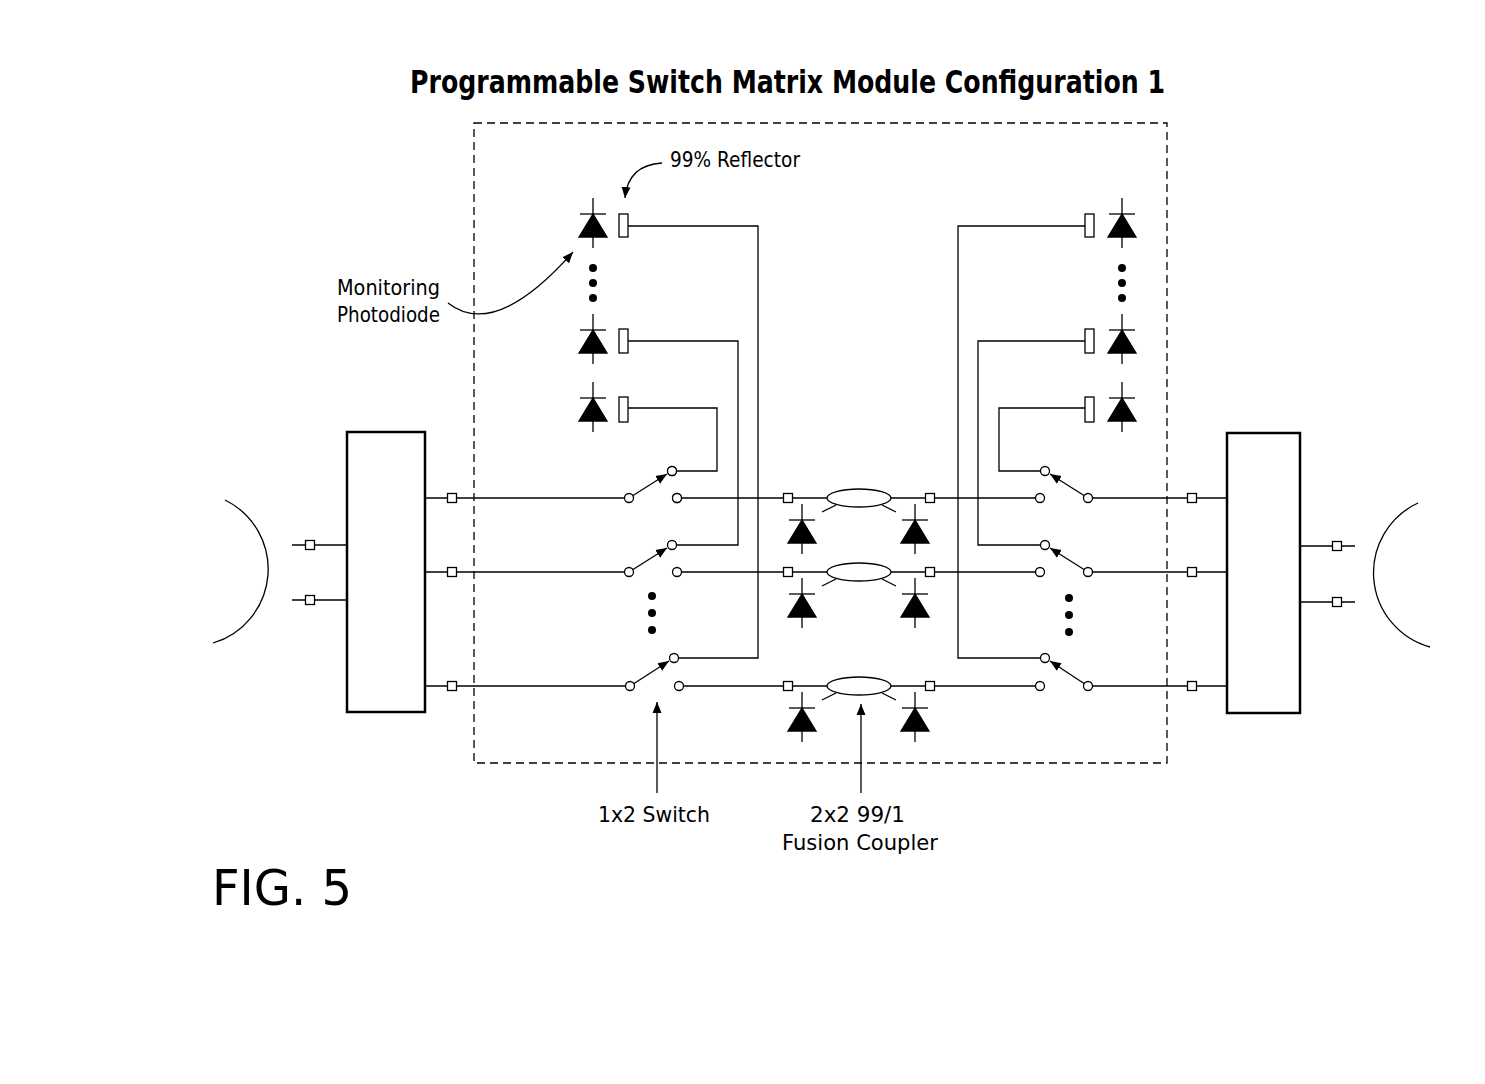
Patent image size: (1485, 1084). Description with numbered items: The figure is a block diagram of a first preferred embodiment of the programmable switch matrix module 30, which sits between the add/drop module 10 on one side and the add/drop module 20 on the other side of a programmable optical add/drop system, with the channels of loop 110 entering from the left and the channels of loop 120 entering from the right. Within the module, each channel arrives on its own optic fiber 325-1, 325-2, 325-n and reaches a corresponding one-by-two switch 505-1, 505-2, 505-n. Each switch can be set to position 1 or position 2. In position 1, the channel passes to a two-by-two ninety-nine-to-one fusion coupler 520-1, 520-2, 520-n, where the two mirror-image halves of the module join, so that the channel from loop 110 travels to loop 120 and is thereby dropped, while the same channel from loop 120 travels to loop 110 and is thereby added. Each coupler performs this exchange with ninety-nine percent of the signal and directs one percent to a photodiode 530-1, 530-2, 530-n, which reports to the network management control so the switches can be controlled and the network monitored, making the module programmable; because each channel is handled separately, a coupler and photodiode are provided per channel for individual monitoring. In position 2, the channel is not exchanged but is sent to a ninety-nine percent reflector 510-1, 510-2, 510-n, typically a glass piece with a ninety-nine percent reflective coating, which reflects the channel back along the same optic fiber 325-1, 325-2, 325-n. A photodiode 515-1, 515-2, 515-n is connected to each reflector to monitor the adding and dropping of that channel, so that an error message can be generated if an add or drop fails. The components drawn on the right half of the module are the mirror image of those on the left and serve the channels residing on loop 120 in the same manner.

The add/drop module 10 is at (383, 712).
The add/drop module 20 is at (1263, 713).
The programmable switch matrix module 30 is at (1167, 197).
The loop 110 is at (238, 606).
The loop 120 is at (1434, 607).
The optic fiber 325-1 is at (455, 503).
The optic fiber 325-2 is at (455, 577).
The optic fiber 325-n is at (455, 691).
The 1×2 switch 505-1 is at (650, 487).
The 1×2 switch 505-2 is at (650, 561).
The 1×2 switch 505-n is at (652, 675).
The switch position 1 is at (675, 466).
The switch position 2 is at (680, 503).
The 99% reflector 510-1 is at (626, 397).
The 99% reflector 510-2 is at (626, 329).
The 99% reflector 510-n is at (627, 240).
The photodiode 515-1 is at (580, 416).
The photodiode 515-2 is at (580, 347).
The photodiode 515-n is at (580, 231).
The 2×2 99/1 fusion coupler 520-1 is at (859, 489).
The 2×2 99/1 fusion coupler 520-2 is at (860, 582).
The 2×2 99/1 fusion coupler 520-n is at (870, 677).
The photodiode 530-1 is at (812, 536).
The photodiode 530-2 is at (790, 612).
The photodiode 530-n is at (796, 719).